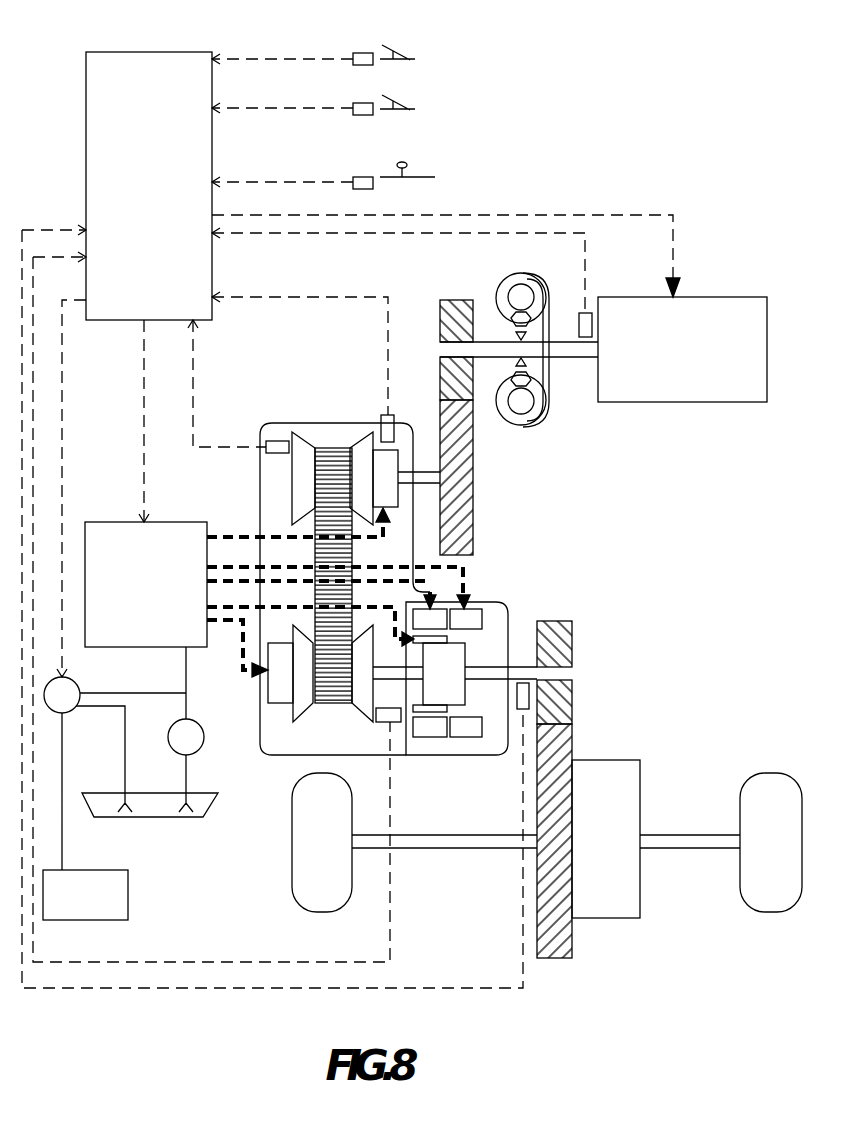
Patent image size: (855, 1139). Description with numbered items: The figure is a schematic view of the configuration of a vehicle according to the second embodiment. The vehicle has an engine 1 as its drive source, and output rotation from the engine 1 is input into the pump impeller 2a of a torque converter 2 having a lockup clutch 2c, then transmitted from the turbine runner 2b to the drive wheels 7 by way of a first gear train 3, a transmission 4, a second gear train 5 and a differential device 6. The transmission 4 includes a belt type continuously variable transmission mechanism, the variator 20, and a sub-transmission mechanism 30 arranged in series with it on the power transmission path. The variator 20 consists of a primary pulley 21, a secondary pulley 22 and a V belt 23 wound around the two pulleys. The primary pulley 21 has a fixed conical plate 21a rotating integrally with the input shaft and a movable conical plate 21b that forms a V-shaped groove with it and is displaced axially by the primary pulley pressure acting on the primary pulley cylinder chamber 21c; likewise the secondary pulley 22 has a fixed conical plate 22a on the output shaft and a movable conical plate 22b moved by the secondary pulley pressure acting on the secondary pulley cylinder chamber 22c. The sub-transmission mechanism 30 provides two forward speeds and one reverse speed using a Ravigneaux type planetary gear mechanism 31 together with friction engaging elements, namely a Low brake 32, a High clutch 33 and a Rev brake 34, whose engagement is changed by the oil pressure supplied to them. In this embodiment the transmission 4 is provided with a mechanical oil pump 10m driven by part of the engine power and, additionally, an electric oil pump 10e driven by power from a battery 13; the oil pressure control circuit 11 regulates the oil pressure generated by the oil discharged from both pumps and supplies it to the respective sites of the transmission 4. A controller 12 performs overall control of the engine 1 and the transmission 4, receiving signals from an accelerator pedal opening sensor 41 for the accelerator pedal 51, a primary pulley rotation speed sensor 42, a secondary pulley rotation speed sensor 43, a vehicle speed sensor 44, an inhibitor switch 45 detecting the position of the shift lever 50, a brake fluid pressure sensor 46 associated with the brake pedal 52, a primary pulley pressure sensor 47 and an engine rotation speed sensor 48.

The engine 1 is at (742, 310).
The torque converter 2 is at (541, 361).
The pump impeller 2a is at (504, 297).
The turbine runner 2b is at (530, 428).
The lockup clutch 2c is at (547, 370).
The first gear train 3 is at (457, 292).
The transmission 4 is at (262, 432).
The second gear train 5 is at (562, 975).
The differential device 6 is at (605, 908).
The drive wheels 7 is at (770, 898).
The electric oil pump 10e is at (64, 713).
The mechanical oil pump 10m is at (180, 753).
The oil pressure control circuit 11 is at (102, 527).
The controller 12 is at (202, 55).
The battery 13 is at (120, 906).
The variator 20 is at (325, 585).
The primary pulley 21 is at (326, 452).
The fixed conical plate 21a is at (290, 466).
The movable conical plate 21b is at (364, 440).
The primary pulley cylinder chamber 21c is at (399, 460).
The secondary pulley 22 is at (315, 716).
The fixed conical plate 22a is at (353, 705).
The movable conical plate 22b is at (292, 710).
The secondary pulley cylinder chamber 22c is at (268, 688).
The V belt 23 is at (333, 447).
The sub-transmission mechanism 30 is at (494, 650).
The Ravigneaux type planetary gear mechanism 31 is at (447, 668).
The Low brake 32 is at (432, 618).
The High clutch 33 is at (430, 708).
The Rev brake 34 is at (460, 618).
The accelerator pedal opening sensor 41 is at (362, 115).
The primary pulley rotation speed sensor 42 is at (275, 441).
The secondary pulley rotation speed sensor 43 is at (382, 723).
The vehicle speed sensor 44 is at (522, 683).
The inhibitor switch 45 is at (363, 177).
The brake fluid pressure sensor 46 is at (363, 53).
The primary pulley pressure sensor 47 is at (400, 408).
The engine rotation speed sensor 48 is at (580, 311).
The shift lever 50 is at (412, 163).
The accelerator pedal 51 is at (395, 101).
The brake pedal 52 is at (395, 51).